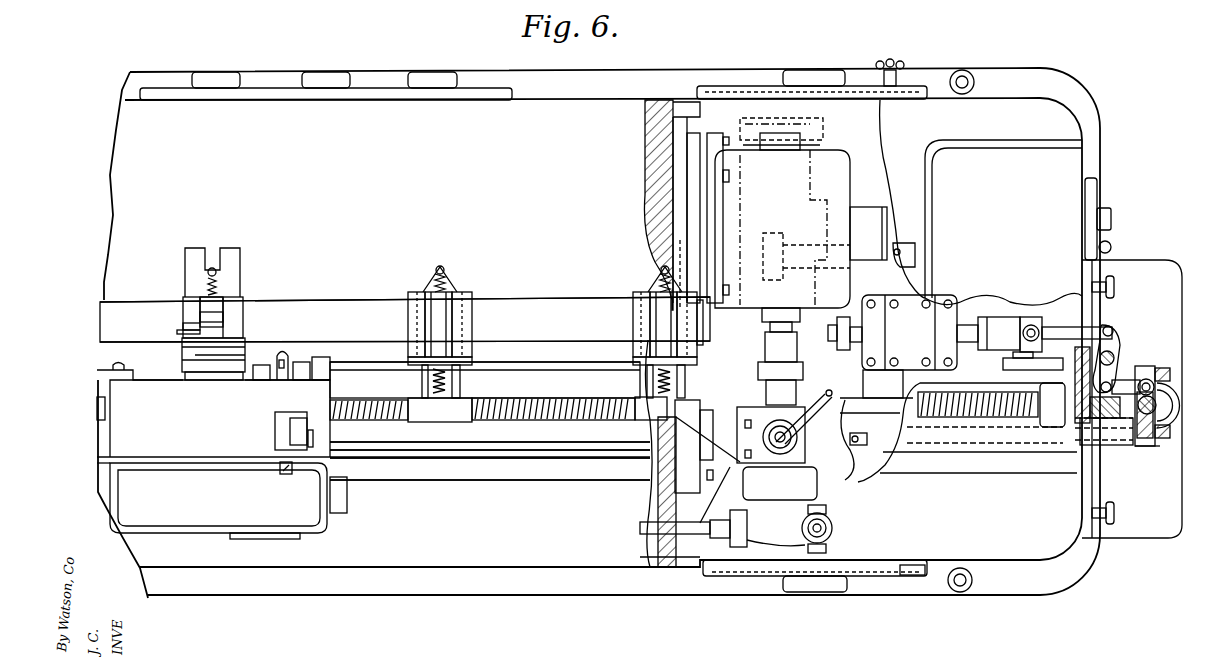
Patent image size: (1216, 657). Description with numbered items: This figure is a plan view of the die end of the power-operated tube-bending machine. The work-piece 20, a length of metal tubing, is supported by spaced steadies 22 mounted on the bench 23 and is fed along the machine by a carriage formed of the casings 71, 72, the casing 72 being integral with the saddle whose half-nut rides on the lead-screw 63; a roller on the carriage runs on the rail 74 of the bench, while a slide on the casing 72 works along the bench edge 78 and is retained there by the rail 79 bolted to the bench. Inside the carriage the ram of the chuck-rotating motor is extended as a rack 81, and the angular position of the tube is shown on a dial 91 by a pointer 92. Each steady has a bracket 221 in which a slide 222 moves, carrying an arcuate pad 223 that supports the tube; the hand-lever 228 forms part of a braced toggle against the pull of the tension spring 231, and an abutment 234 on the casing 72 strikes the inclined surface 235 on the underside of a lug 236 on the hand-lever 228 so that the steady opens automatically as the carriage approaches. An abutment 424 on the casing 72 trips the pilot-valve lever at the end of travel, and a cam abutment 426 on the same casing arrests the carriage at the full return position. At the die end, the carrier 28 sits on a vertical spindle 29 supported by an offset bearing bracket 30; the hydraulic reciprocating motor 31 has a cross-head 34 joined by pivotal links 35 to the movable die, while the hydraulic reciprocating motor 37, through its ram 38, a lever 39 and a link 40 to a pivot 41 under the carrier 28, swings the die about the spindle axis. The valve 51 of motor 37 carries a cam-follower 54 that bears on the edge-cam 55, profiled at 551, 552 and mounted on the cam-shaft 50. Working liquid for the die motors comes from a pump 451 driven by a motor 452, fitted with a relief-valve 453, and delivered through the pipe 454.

The work-piece 20 is at (380, 405).
The steadies 22 is at (455, 422).
The bench 23 is at (505, 445).
The carrier 28 is at (1150, 447).
The vertical spindle 29 is at (1162, 400).
The offset bearing bracket 30 is at (1122, 440).
The hydraulic reciprocating motor 31 is at (1172, 405).
The cross-head 34 is at (1160, 448).
The pivotal links 35 is at (1168, 373).
The hydraulic reciprocating motor 37 is at (882, 372).
The ram 38 is at (968, 322).
The lever 39 is at (1118, 350).
The link 40 is at (1122, 384).
The pivot 41 is at (1147, 382).
The cam-shaft 50 is at (905, 270).
The valve 51 is at (845, 350).
The cam-follower 54 is at (828, 340).
The edge-cam 55 is at (840, 192).
The lead-screw 63 is at (590, 400).
The casing 71 is at (202, 533).
The casing 72 is at (245, 388).
The rail 74 is at (420, 455).
The bench edge 78 is at (505, 370).
The rail 79 is at (510, 348).
The rack 81 is at (278, 478).
The dial 91 is at (313, 420).
The pointer 92 is at (314, 444).
The bracket 221 is at (238, 308).
The slide 222 is at (232, 266).
The arcuate pad 223 is at (188, 365).
The hand-lever 228 is at (218, 300).
The tension spring 231 is at (212, 262).
The abutment 234 is at (333, 372).
The inclined surface 235 is at (188, 323).
The lug 236 is at (182, 331).
The abutment 424 is at (285, 356).
The cam abutment 426 is at (119, 355).
The pump 451 is at (805, 458).
The motor 452 is at (852, 208).
The relief-valve 453 is at (822, 508).
The pipe 454 is at (800, 428).
The cam profile 551 is at (845, 258).
The cam profile 552 is at (816, 140).